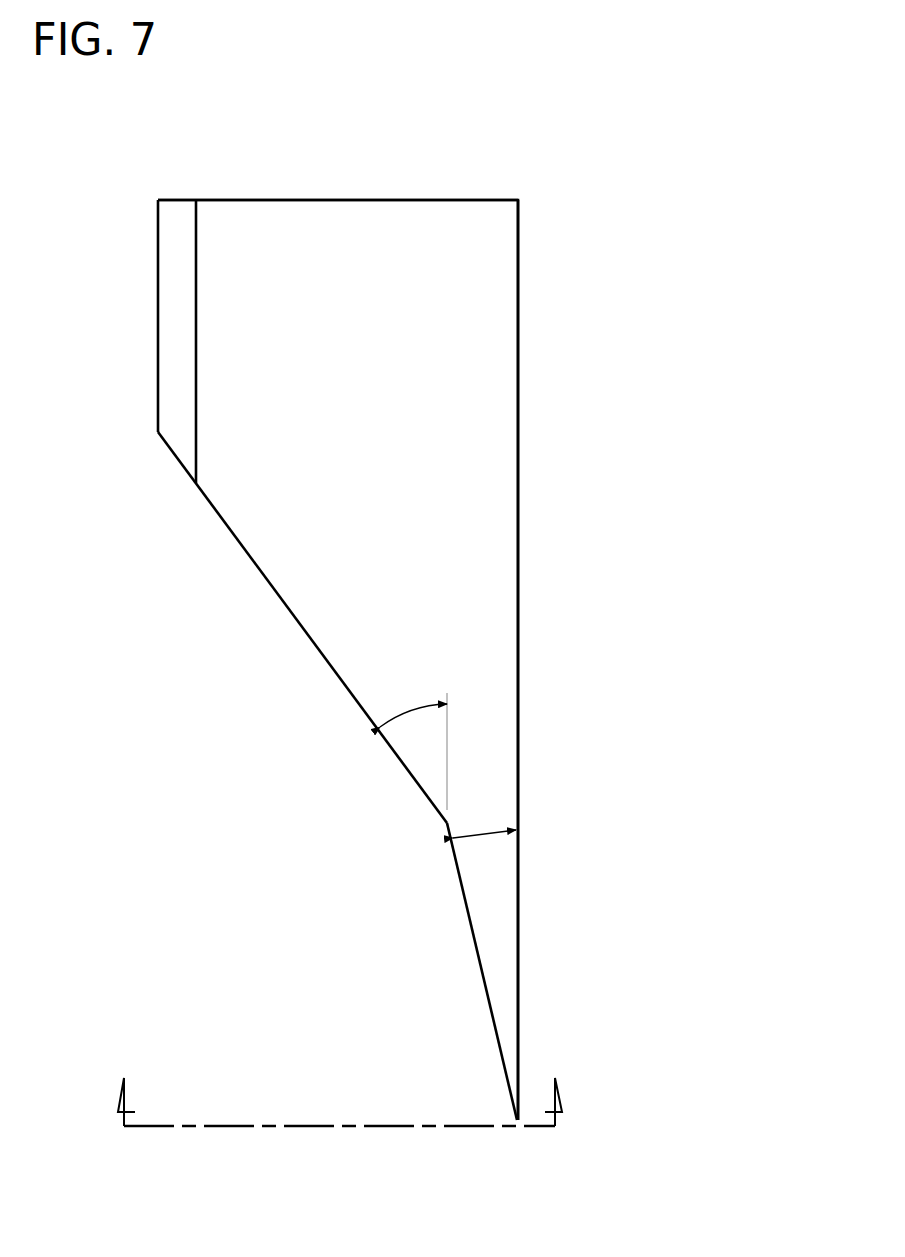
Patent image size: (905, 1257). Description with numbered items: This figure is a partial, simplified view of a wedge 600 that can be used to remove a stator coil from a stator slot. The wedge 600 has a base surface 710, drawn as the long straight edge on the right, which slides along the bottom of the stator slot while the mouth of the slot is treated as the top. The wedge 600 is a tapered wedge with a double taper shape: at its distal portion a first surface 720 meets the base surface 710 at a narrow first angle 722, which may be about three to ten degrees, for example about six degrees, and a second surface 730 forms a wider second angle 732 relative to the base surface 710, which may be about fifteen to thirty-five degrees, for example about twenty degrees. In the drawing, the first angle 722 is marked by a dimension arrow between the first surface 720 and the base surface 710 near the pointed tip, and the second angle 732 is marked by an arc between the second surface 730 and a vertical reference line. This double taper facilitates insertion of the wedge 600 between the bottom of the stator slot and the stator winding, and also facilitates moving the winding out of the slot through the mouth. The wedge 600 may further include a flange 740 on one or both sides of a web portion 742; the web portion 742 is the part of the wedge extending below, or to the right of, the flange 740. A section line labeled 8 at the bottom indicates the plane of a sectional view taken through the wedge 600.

The wedge 600 is at (380, 343).
The base surface 710 is at (518, 468).
The first surface 720 is at (472, 940).
The first angle 722 is at (487, 832).
The second surface 730 is at (292, 619).
The second angle 732 is at (411, 712).
The flange 740 is at (174, 341).
The web portion 742 is at (236, 221).
The section line 8- 8 is at (339, 1086).